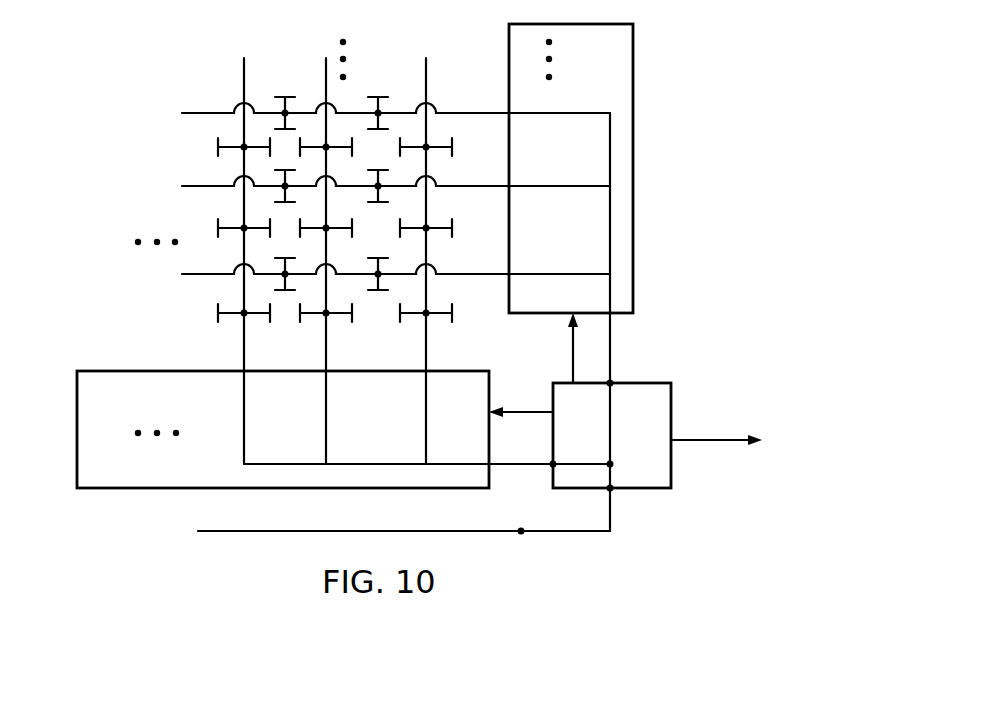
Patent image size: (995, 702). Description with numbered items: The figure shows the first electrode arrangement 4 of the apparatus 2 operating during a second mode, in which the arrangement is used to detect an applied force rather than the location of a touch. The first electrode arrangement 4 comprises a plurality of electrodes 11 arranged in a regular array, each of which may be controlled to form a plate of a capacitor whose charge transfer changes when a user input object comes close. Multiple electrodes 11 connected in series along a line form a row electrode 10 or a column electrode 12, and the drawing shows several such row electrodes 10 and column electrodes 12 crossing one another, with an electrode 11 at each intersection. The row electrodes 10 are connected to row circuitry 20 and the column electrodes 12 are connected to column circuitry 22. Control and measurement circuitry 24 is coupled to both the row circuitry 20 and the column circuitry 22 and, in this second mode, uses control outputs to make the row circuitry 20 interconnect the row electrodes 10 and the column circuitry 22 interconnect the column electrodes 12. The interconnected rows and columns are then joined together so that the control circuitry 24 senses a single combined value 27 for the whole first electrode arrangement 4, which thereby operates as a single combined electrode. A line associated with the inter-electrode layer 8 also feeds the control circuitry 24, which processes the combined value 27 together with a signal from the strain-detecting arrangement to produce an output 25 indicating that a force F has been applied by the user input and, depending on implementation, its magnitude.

The apparatus 2 is at (726, 104).
The first electrode arrangement 4 is at (188, 324).
The inter-electrode layer 8 is at (338, 530).
The row electrode 10 is at (182, 113).
The electrodes 11 is at (298, 223).
The column electrode 12 is at (325, 98).
The row circuitry 20 is at (633, 190).
The column circuitry 22 is at (77, 470).
The control and measurement circuitry 24 is at (650, 381).
The output 25 is at (700, 430).
The single combined value 27 is at (620, 464).